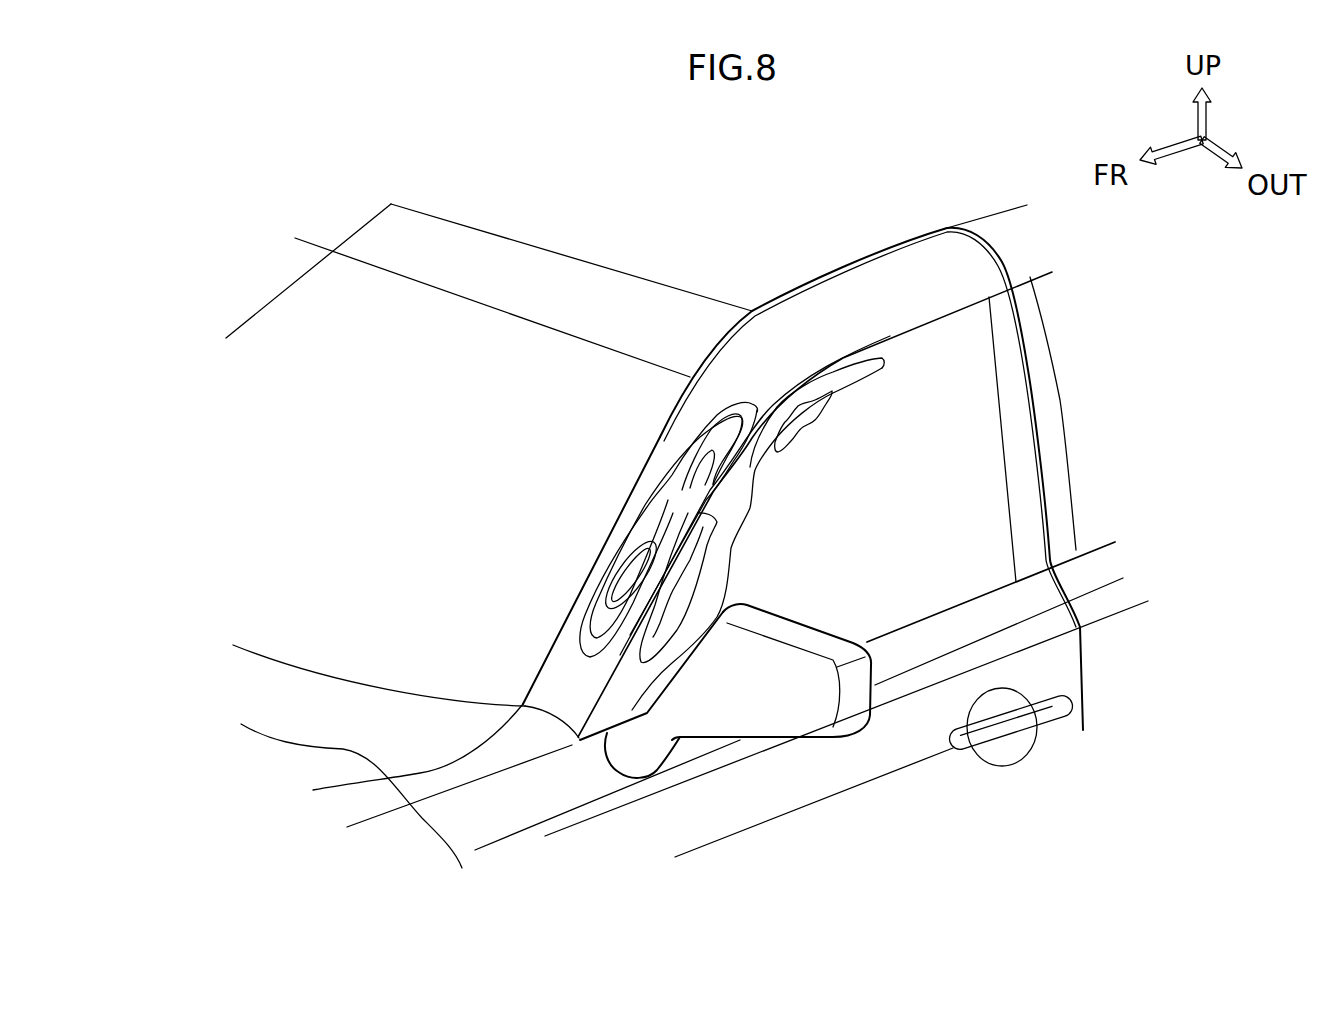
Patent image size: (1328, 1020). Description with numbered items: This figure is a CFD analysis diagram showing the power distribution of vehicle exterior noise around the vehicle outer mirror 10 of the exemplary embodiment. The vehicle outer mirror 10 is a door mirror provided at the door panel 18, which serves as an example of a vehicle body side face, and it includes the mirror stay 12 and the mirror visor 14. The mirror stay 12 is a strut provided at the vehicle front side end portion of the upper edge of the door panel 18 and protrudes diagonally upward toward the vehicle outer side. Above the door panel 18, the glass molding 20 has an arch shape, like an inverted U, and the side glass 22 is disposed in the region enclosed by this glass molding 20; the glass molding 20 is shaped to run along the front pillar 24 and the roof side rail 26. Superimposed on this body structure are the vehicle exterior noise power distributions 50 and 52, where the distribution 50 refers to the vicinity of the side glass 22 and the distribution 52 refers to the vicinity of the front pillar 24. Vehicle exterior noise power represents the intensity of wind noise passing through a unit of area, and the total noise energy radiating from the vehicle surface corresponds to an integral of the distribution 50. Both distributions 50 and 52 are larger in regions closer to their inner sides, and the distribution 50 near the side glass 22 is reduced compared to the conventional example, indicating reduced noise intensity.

The vehicle outer mirror 10 is at (827, 607).
The mirror stay 12 is at (668, 748).
The mirror visor 14 is at (773, 623).
The door panel 18 is at (950, 630).
The glass molding 20 is at (988, 383).
The side glass 22 is at (860, 453).
The front pillar 24 is at (641, 476).
The roof side rail 26 is at (838, 263).
The vehicle exterior noise power distribution 50 is at (757, 494).
The vehicle exterior noise power distribution 52 is at (700, 433).